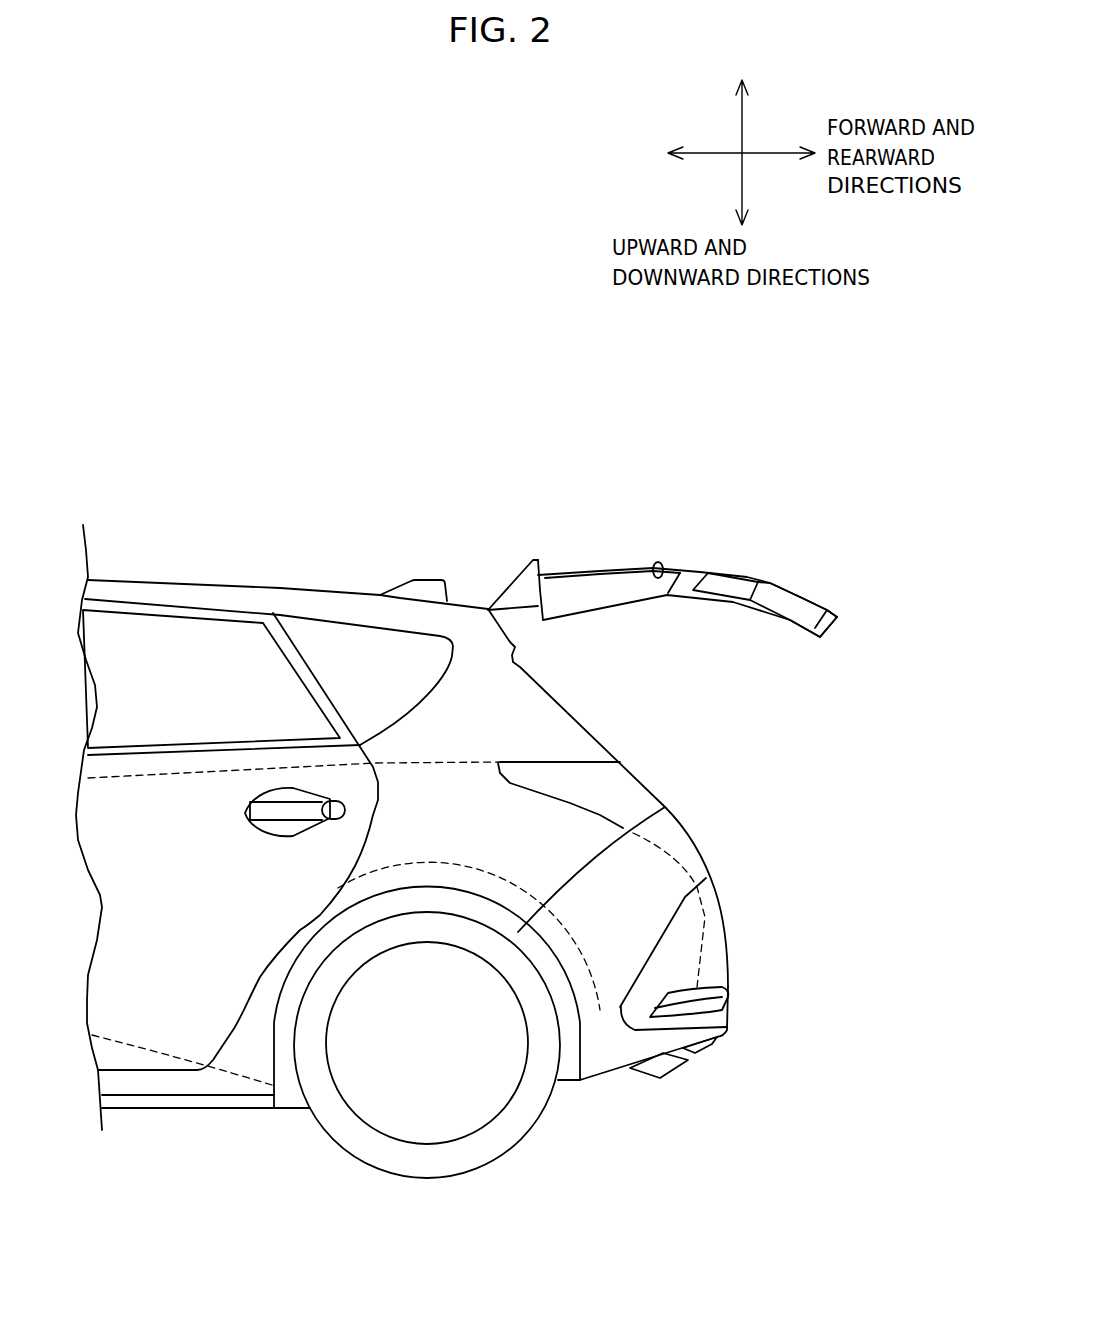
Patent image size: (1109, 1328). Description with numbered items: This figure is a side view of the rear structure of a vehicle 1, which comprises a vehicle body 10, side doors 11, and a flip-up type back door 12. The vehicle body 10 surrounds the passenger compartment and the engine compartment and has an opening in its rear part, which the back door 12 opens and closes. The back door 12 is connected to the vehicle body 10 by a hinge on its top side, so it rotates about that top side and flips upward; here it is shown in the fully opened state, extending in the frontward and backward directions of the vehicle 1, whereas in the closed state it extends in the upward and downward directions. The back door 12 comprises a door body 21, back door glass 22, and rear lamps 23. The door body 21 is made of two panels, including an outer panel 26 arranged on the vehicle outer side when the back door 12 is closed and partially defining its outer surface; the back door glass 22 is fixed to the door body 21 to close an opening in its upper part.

The vehicle 1 is at (385, 508).
The vehicle body 10 is at (487, 697).
The side door 11 is at (165, 973).
The back door 12 is at (694, 505).
The door body 21 is at (830, 607).
The back door glass 22 is at (600, 587).
The rear lamp 23 is at (728, 583).
The outer panel 26 is at (775, 597).